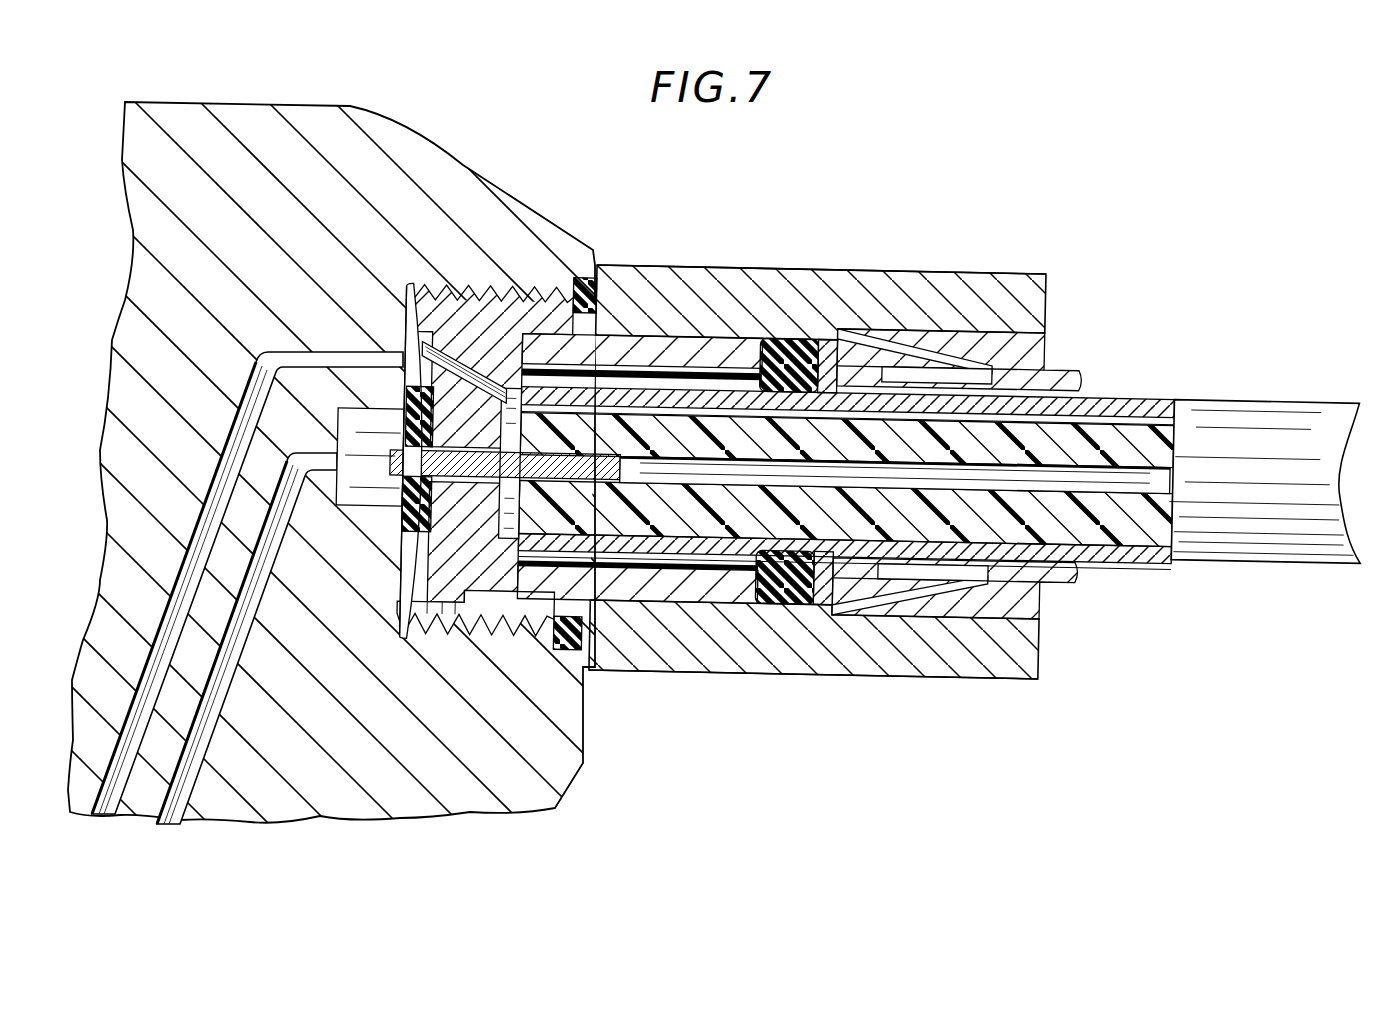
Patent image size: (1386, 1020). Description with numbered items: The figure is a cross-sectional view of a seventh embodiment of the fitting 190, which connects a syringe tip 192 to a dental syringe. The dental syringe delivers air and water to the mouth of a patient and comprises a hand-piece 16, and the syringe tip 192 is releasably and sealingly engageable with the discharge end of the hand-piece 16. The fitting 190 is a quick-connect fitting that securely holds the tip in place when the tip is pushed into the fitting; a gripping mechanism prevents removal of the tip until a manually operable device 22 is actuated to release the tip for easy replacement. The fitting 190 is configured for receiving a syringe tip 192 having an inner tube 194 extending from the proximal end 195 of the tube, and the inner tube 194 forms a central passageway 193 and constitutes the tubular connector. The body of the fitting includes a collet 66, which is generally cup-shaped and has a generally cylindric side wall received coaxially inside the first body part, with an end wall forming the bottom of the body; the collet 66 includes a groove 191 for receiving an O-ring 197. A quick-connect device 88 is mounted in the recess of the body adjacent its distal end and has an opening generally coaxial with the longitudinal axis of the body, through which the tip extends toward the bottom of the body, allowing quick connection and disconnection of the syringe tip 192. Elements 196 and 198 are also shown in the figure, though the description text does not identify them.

The hand-piece 16 is at (270, 145).
The manually operable device 22 is at (1080, 578).
The collet 66 is at (662, 352).
The quick-connect device 88 is at (1027, 350).
The fitting 190 is at (1012, 262).
The groove 191 is at (393, 527).
The syringe tip 192 is at (1237, 430).
The central passageway 193 is at (597, 480).
The inner tube 194 is at (732, 472).
The proximal end 195 is at (500, 513).
The inner conductor 196 is at (458, 400).
The O-ring 197 is at (412, 292).
The housing 198 is at (848, 300).